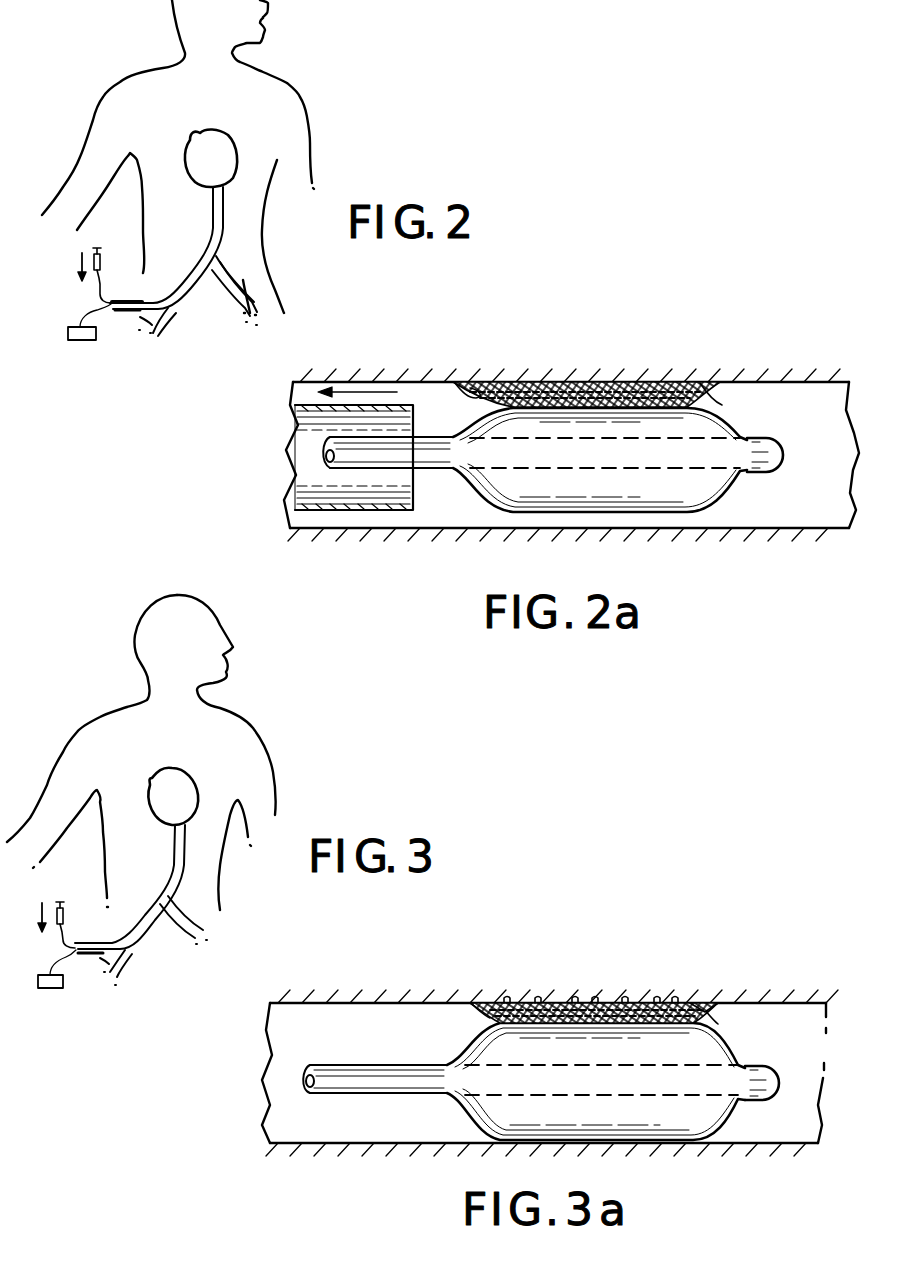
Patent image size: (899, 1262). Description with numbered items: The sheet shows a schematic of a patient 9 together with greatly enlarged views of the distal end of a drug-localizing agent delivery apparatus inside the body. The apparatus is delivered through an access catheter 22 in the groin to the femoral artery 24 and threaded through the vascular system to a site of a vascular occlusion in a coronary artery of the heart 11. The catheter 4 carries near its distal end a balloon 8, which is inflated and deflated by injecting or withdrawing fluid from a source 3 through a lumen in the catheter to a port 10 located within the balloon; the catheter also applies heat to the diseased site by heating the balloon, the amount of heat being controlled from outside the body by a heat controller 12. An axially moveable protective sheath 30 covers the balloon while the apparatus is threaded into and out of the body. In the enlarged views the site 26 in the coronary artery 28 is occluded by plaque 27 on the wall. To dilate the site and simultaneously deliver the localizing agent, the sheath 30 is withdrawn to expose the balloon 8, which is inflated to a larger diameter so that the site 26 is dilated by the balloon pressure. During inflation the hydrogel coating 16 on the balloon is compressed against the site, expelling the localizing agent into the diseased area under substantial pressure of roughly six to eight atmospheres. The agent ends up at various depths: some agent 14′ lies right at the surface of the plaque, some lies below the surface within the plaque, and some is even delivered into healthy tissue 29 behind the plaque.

In FIG. 2, the patient 9 is at (284, 76).
In FIG. 3, the patient 9 is at (232, 722).
In FIG. 2, the heart 11 is at (235, 158).
In FIG. 3, the heart 11 is at (200, 795).
In FIG. 2, the source 3 is at (103, 265).
In FIG. 3, the source 3 is at (65, 914).
In FIG. 2, the access catheter 22 is at (128, 316).
In FIG. 2, the femoral artery 24 is at (175, 306).
In FIG. 2, the heat controller 12 is at (70, 340).
In FIG. 3, the heat controller 12 is at (46, 988).
In FIG. 2A, the protective sheath 30 is at (403, 400).
In FIG. 2A, the catheter 4 is at (440, 470).
In FIG. 3A, the catheter 4 is at (355, 1065).
In FIG. 2A, the balloon 8 is at (724, 500).
In FIG. 3A, the balloon 8 is at (730, 1112).
In FIG. 2A, the port 10 is at (605, 438).
In FIG. 3A, the port 10 is at (602, 1070).
In FIG. 2A, the healthy tissue 29 is at (592, 356).
In FIG. 3A, the healthy tissue 29 is at (514, 988).
In FIG. 2A, the plaque 27 is at (455, 383).
In FIG. 3A, the plaque 27 is at (470, 1008).
In FIG. 2A, the coating 16 is at (708, 383).
In FIG. 3A, the coating 16 is at (705, 1025).
In FIG. 2A, the site 26 is at (768, 416).
In FIG. 3A, the site 26 is at (773, 1020).
In FIG. 2A, the coronary artery 28 is at (846, 521).
In FIG. 3A, the agent 14′ is at (690, 1003).